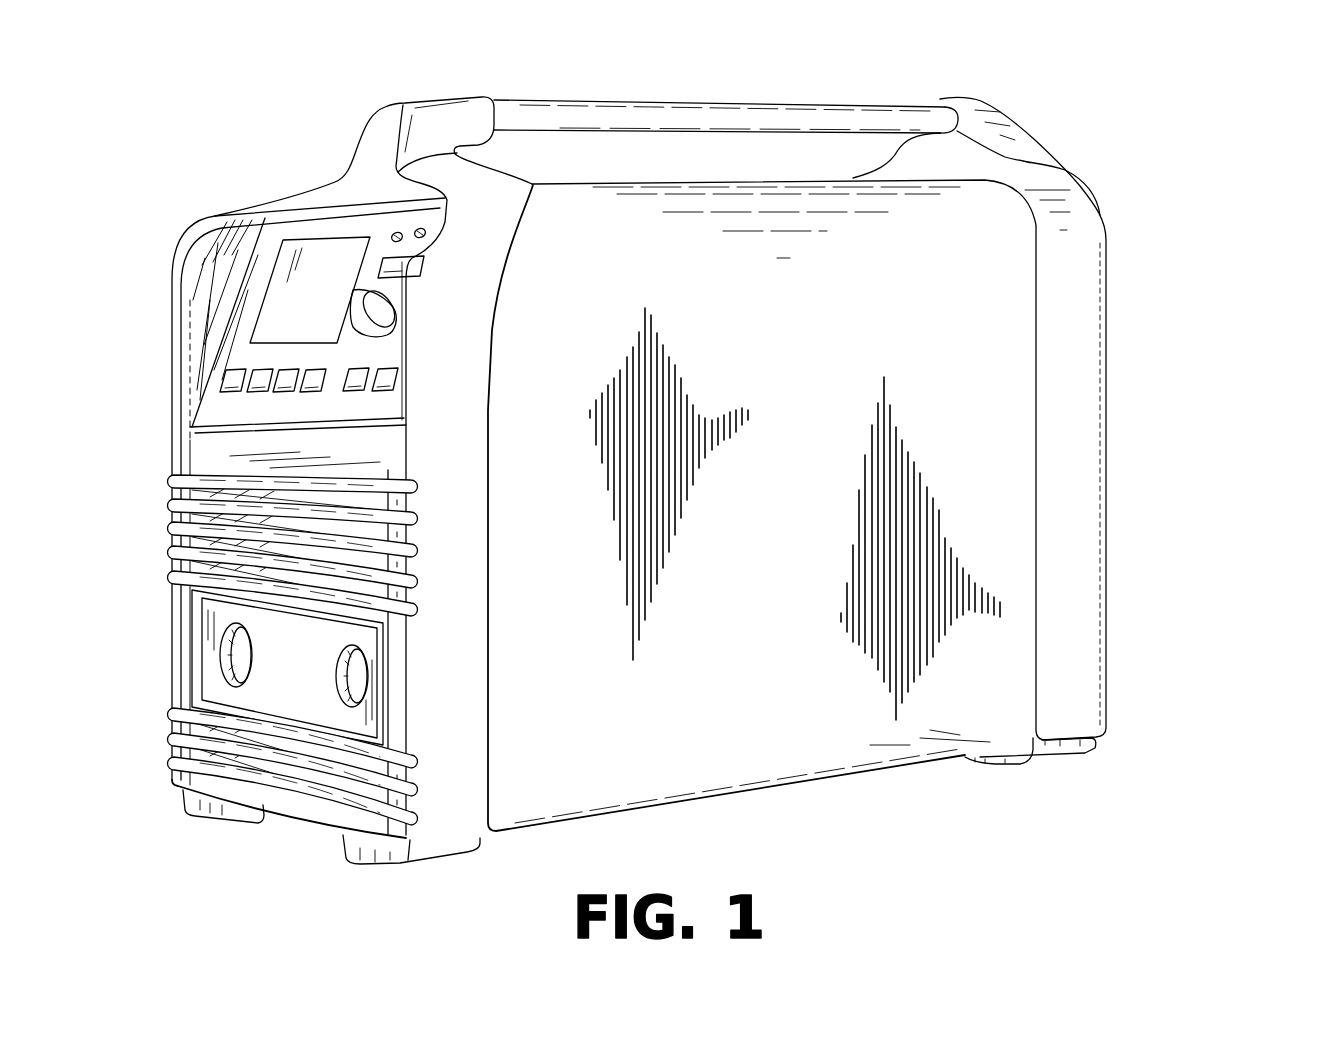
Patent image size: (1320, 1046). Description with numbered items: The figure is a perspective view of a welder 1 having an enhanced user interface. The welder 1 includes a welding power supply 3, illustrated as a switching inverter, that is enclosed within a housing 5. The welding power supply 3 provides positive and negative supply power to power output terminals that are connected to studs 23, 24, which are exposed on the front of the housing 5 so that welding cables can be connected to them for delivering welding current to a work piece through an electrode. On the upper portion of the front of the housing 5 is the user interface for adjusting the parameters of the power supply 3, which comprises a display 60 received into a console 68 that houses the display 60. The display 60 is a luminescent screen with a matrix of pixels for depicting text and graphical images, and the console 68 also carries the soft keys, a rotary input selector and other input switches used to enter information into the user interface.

The welder 1 is at (665, 454).
The welding power supply 3 is at (662, 480).
The housing 5 is at (1018, 327).
The stud 23 is at (234, 660).
The stud 24 is at (350, 697).
The display 60 is at (338, 309).
The console 68 is at (204, 315).